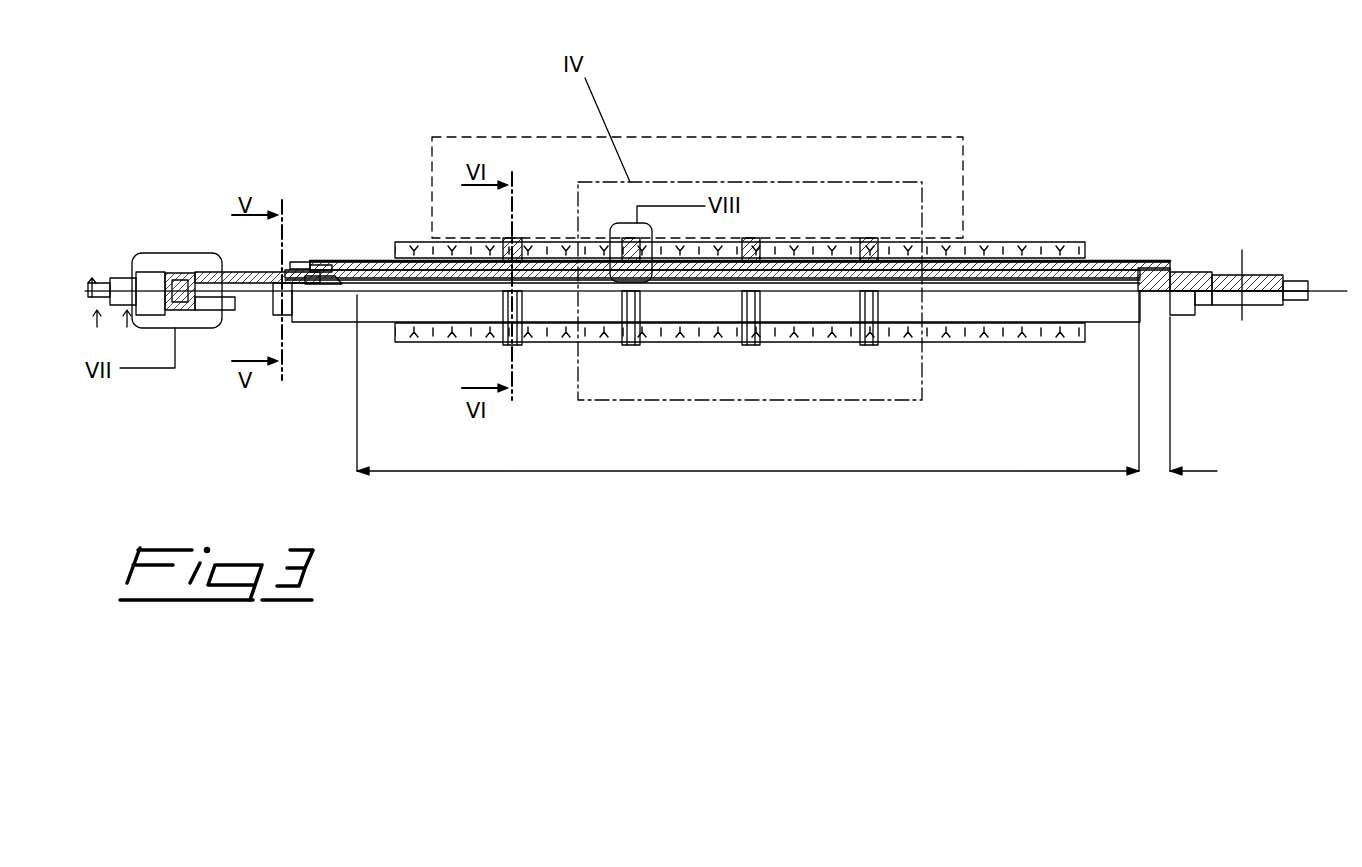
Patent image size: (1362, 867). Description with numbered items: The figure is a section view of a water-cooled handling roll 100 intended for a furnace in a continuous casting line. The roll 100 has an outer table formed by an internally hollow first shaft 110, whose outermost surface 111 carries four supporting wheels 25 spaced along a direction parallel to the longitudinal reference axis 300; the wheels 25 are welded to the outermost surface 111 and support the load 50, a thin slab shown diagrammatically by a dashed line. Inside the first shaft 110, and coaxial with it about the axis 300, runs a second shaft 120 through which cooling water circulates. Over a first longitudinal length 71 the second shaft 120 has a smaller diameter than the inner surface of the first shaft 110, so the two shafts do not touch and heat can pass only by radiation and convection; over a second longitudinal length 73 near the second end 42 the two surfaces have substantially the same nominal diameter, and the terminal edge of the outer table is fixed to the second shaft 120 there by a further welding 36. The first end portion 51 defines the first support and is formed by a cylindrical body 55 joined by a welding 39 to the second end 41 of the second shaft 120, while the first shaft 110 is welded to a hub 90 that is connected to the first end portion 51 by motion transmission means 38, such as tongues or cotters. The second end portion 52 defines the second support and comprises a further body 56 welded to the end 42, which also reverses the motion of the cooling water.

The handling roll 100 is at (1052, 125).
The supporting wheels 25 is at (862, 358).
The further welding 36 is at (1177, 250).
The motion transmission means 38 is at (275, 283).
The welding 39 is at (312, 263).
The second end of the second shaft 41 is at (322, 270).
The second end of the second shaft 42 is at (1190, 268).
The load 50 is at (936, 166).
The first end portion 51 is at (186, 256).
The second end portion 52 is at (1264, 326).
The cylindrical body 55 is at (232, 273).
The further body 56 is at (1183, 305).
The first longitudinal length 71 is at (943, 471).
The second longitudinal length 73 is at (1150, 471).
The hub 90 is at (300, 262).
The first shaft 110 is at (1120, 263).
The outermost surface 111 is at (1103, 250).
The second shaft 120 is at (395, 272).
The longitudinal reference axis 300 is at (1323, 290).